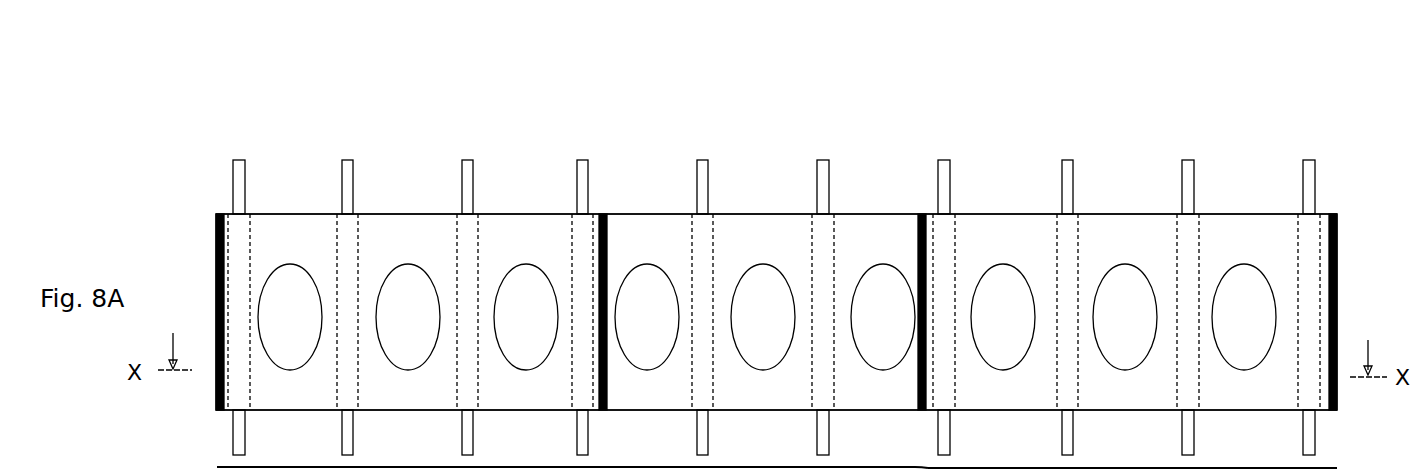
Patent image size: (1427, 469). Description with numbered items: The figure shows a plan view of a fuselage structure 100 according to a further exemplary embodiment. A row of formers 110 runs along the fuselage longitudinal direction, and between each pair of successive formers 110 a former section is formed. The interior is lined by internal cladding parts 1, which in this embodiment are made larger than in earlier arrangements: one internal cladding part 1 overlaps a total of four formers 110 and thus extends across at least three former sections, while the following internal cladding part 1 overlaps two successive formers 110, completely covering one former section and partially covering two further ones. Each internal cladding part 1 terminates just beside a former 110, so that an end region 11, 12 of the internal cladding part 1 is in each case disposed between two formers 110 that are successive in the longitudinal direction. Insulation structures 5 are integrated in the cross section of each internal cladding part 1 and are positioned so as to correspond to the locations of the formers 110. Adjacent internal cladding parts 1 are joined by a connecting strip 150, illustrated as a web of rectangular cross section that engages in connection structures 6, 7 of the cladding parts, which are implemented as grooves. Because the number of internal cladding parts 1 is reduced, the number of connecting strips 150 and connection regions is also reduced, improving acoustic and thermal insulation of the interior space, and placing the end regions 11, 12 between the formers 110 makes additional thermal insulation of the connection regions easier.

The fuselage structure 100 is at (1207, 47).
The internal cladding part 1 is at (398, 213).
The insulation structure 5 is at (250, 228).
The former 110 is at (238, 162).
The connecting strip 150 is at (605, 233).
The end region 11 is at (608, 467).
The end region 12 is at (916, 467).
The connection structure 6 is at (930, 468).
The connection structure 7 is at (1337, 468).